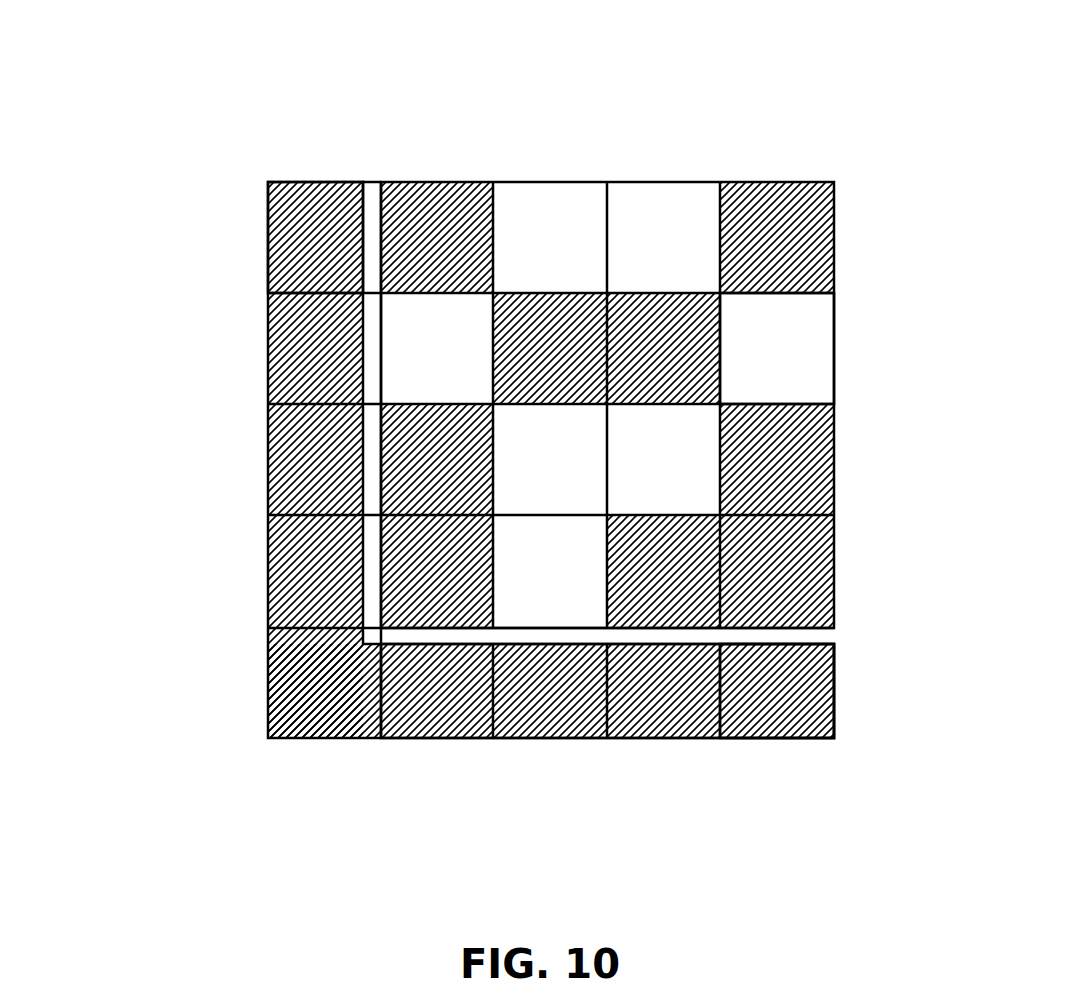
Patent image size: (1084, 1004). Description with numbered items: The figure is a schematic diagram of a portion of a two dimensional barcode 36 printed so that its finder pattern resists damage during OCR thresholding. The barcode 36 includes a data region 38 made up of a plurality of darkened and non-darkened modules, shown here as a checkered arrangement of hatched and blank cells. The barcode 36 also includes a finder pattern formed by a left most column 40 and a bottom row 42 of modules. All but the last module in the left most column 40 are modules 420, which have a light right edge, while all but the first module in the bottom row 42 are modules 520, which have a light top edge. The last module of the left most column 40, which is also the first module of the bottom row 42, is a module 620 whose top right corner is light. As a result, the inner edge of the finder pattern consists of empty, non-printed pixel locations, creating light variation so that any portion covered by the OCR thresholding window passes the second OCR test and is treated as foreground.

The two dimensional barcode 36 is at (471, 451).
The data region 38 is at (834, 352).
The left most column 40 is at (303, 182).
The bottom row 42 is at (802, 688).
The modules 420 is at (471, 405).
The modules 520 is at (632, 746).
The module 620 is at (468, 465).